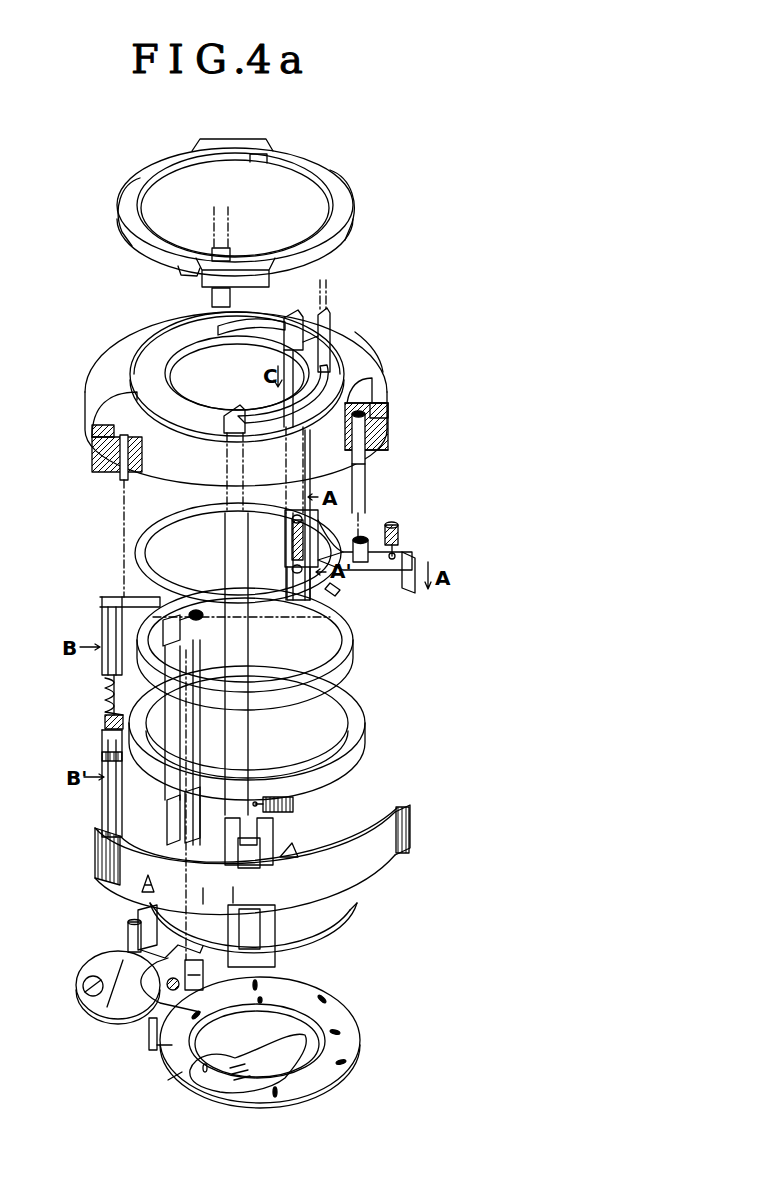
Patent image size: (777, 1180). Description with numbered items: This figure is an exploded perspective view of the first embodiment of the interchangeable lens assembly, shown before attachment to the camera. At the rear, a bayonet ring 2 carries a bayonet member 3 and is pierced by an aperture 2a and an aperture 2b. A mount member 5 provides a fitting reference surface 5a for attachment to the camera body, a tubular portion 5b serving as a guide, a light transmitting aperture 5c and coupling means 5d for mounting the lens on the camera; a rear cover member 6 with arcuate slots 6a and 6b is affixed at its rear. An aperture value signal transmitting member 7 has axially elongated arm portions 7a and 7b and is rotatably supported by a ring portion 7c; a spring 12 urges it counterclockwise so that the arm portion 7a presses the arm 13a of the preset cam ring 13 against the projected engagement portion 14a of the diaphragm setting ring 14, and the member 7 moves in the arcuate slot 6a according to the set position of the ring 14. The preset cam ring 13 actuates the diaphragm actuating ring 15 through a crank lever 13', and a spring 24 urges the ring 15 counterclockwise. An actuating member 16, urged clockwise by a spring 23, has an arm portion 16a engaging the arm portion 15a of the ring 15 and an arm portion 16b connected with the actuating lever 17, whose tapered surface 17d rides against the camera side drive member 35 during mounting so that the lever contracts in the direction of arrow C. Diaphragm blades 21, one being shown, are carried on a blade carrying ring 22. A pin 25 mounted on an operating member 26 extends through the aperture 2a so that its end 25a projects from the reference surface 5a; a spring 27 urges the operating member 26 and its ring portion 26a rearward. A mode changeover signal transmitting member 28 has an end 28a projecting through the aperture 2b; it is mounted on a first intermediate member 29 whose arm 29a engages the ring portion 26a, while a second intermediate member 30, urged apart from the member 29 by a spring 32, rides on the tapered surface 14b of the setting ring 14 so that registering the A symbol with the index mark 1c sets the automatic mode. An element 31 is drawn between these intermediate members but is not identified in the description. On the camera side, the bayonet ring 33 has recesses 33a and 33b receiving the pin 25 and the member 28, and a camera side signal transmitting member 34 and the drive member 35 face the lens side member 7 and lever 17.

The camera side bayonet ring 33 is at (342, 206).
The recess 33a is at (258, 163).
The recess 33b is at (178, 271).
The camera side drive member 35 is at (212, 252).
The mount member 5 is at (178, 472).
The fitting reference surface 5a is at (366, 382).
The tubular portion 5b is at (100, 400).
The light transmitting aperture 5c is at (200, 345).
The coupling means 5d is at (355, 360).
The rear cover member 6 is at (165, 362).
The arcuate slot 6a is at (268, 418).
The arcuate slot 6b is at (248, 334).
The aperture value signal transmitting member 7 is at (231, 409).
The arm portion 7a is at (240, 826).
The arm portion 7b is at (250, 740).
The ring portion 7c is at (362, 740).
The bayonet ring 2 is at (390, 425).
The aperture 2a is at (390, 448).
The aperture 2b is at (92, 455).
The bayonet member 3 is at (388, 406).
The pin 25 is at (365, 458).
The pin end 25a is at (382, 408).
The mode changeover signal transmitting member 28 is at (121, 478).
The end 28a is at (92, 430).
The actuating lever 17 is at (328, 318).
The tapered surface 17d is at (300, 312).
The camera side signal transmitting member 34 is at (330, 332).
The operating member 26 is at (415, 565).
The ring portion 26a is at (340, 548).
The spring 27 is at (398, 535).
The actuating member 16 is at (352, 640).
The arm portion 16a is at (172, 815).
The arm portion 16b is at (322, 586).
The spring 23 is at (196, 608).
The first intermediate member 29 is at (104, 620).
The arm 29a is at (110, 597).
The spring 31 is at (107, 700).
The spring 32 is at (105, 722).
The second intermediate member 30 is at (105, 808).
The diaphragm actuating ring 15 is at (320, 1080).
The arm portion 15a is at (195, 800).
The spring 12 is at (295, 805).
The diaphragm setting ring 14 is at (380, 860).
The projected engagement portion 14a is at (296, 848).
The tapered surface 14b is at (120, 870).
The index mark 1c is at (136, 901).
The preset cam ring 13 is at (267, 929).
The arm 13a is at (272, 932).
The crank lever 13' is at (138, 1041).
The blade carrying ring 22 is at (350, 1028).
The diaphragm blades 21 is at (262, 1092).
The spring 24 is at (168, 984).